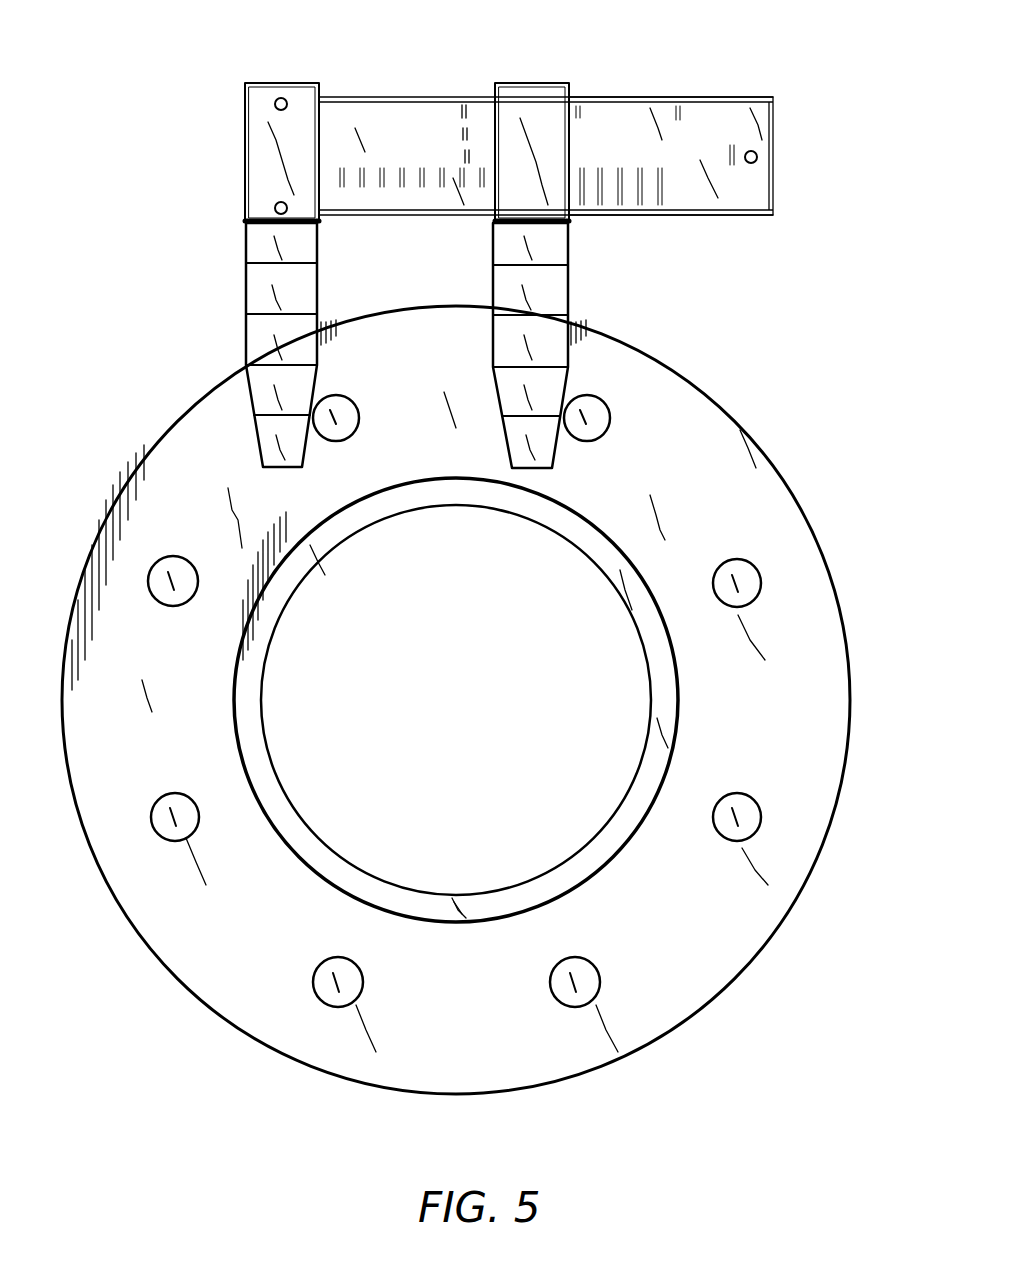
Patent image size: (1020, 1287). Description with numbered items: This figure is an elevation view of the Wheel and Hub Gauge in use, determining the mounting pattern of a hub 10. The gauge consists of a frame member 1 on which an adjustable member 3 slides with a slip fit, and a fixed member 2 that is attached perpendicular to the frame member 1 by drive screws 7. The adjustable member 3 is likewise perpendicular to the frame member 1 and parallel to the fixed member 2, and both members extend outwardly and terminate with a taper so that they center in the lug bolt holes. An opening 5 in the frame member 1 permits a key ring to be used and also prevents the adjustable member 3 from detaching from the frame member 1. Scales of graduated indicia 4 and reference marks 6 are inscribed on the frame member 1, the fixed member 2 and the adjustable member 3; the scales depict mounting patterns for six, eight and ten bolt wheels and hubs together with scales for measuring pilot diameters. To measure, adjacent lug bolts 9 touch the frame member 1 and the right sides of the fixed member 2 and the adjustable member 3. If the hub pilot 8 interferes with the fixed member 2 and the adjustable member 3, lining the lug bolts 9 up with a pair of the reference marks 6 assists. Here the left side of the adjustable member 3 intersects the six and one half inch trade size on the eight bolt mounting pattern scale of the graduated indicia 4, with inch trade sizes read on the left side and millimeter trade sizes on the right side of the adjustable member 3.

The frame member 1 is at (393, 97).
The fixed member 2 is at (306, 84).
The adjustable member 3 is at (550, 84).
The scales of graduated indicia 4 is at (684, 112).
The opening 5 is at (757, 156).
The reference marks 6 is at (256, 262).
The drive screws 7 is at (276, 100).
The hub pilot 8 is at (600, 840).
The lug bolts 9 is at (352, 404).
The hub 10 is at (773, 469).